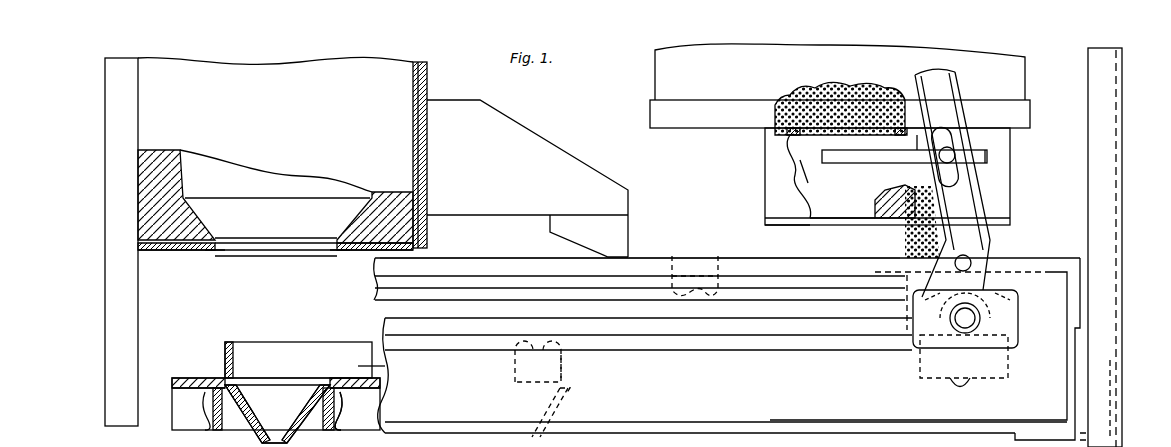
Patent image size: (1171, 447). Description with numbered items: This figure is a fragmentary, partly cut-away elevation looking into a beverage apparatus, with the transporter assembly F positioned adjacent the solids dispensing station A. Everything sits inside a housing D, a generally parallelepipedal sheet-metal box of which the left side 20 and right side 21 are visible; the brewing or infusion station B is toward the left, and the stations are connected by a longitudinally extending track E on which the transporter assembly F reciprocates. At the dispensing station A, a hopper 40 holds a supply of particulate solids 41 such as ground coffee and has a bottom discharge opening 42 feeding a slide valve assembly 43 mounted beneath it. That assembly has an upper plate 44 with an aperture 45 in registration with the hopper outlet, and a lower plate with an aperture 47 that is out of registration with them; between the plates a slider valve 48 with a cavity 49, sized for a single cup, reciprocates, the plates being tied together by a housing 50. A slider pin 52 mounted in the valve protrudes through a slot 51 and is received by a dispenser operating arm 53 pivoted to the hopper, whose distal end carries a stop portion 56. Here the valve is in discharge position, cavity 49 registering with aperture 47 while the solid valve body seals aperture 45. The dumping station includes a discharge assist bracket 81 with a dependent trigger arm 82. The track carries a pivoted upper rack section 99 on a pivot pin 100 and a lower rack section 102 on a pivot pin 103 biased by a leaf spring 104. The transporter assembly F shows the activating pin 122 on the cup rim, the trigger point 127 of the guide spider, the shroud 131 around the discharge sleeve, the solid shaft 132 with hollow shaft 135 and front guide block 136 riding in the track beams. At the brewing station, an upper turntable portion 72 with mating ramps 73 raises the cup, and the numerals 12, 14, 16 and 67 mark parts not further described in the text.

The hopper base 12 is at (191, 412).
The hopper wall 14 is at (347, 388).
The housing bottom 16 is at (792, 226).
The left side 20 is at (104, 290).
The right side 21 is at (1122, 258).
The hopper 40 is at (665, 84).
The particulate solids 41 is at (850, 92).
The bottom discharge opening 42 is at (787, 132).
The slide valve assembly 43 is at (760, 184).
The upper plate 44 is at (1012, 132).
The aperture 45 is at (792, 150).
The aperture 47 is at (913, 210).
The slider valve 48 is at (860, 243).
The cavity 49 is at (920, 214).
The housing 50 is at (998, 178).
The slot 51 is at (832, 158).
The slider pin 52 is at (965, 158).
The dispenser operating arm 53 is at (955, 97).
The stop portion 56 is at (985, 262).
The seal 67 is at (210, 252).
The upper turntable portion 72 is at (336, 425).
The ramps 73 is at (385, 366).
The discharge assist bracket 81 is at (565, 160).
The trigger arm 82 is at (630, 243).
The upper rack section 99 is at (668, 278).
The pivot pin 100 is at (727, 266).
The lower rack section 102 is at (514, 363).
The pivot pin 103 is at (565, 367).
The leaf spring 104 is at (572, 398).
The solids dispensing station activating pin 122 is at (872, 276).
The trigger point 127 is at (965, 395).
The shroud 131 is at (1010, 373).
The shaft 132 is at (962, 330).
The hollow shaft 135 is at (975, 305).
The front guide block 136 is at (1008, 328).
The solids dispensing station A is at (997, 73).
The brewing station B is at (330, 82).
The housing D is at (102, 189).
The track E is at (662, 253).
The transporter assembly F is at (915, 320).